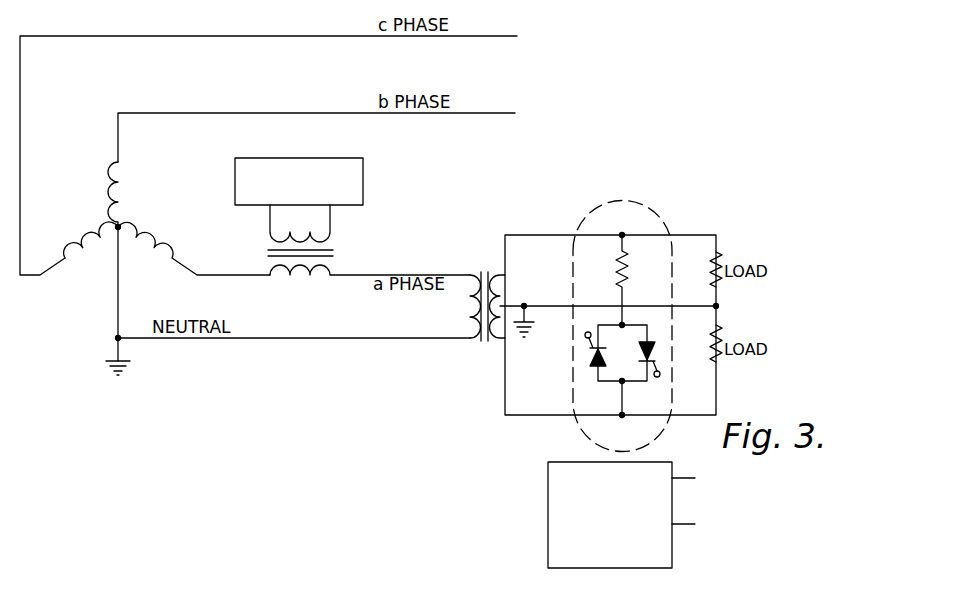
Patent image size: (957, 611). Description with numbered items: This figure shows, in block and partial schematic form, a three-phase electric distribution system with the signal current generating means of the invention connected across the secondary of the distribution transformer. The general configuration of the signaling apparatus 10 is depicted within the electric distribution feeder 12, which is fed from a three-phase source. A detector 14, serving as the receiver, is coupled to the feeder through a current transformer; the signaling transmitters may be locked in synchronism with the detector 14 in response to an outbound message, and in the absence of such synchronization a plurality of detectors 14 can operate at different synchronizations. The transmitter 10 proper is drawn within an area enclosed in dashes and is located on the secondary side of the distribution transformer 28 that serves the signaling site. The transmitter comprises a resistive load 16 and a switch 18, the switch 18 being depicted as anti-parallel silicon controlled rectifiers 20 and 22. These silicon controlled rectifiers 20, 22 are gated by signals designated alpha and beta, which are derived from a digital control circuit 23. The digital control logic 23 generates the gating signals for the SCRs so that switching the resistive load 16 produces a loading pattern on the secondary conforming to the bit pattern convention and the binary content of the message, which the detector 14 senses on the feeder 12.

The signaling apparatus 10 is at (641, 197).
The electric distribution feeder 12 is at (316, 305).
The detector 14 is at (363, 172).
The resistive load 16 is at (628, 272).
The switch 18 is at (621, 380).
The silicon controlled rectifier 20 is at (593, 366).
The silicon controlled rectifier 22 is at (655, 354).
The digital control circuit 23 is at (548, 472).
The distribution transformer 28 is at (481, 271).